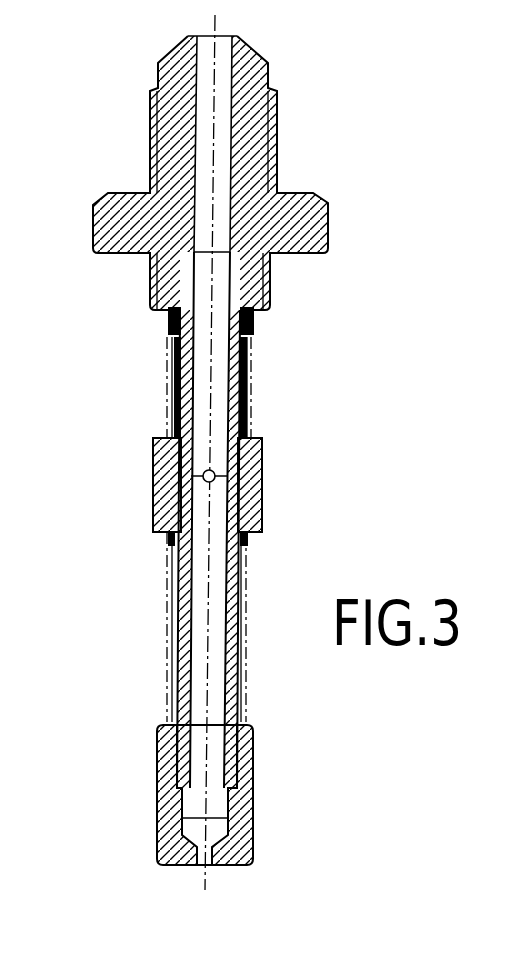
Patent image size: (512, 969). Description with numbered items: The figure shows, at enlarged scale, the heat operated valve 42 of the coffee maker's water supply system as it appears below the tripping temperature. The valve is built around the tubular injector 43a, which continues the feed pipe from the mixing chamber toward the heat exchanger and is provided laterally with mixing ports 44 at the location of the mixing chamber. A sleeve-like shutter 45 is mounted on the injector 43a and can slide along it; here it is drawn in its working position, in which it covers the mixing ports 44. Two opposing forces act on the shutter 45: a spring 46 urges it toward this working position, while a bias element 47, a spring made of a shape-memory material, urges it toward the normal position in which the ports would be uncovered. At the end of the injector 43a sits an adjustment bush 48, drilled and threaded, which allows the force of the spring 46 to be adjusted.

The heat operated valve 42 is at (326, 158).
The tubular injector 43a is at (247, 345).
The mixing ports 44 is at (213, 484).
The sleeve-like shutter 45 is at (152, 470).
The spring 46 is at (170, 567).
The bias element 47 is at (166, 322).
The adjustment bush 48 is at (158, 795).